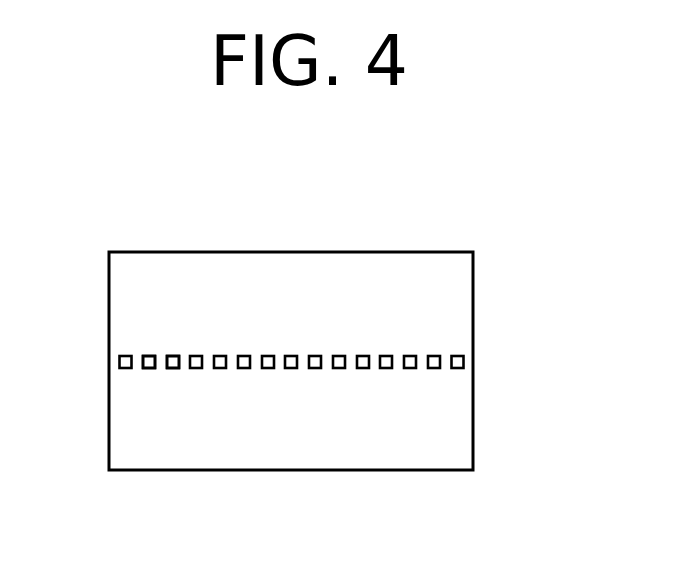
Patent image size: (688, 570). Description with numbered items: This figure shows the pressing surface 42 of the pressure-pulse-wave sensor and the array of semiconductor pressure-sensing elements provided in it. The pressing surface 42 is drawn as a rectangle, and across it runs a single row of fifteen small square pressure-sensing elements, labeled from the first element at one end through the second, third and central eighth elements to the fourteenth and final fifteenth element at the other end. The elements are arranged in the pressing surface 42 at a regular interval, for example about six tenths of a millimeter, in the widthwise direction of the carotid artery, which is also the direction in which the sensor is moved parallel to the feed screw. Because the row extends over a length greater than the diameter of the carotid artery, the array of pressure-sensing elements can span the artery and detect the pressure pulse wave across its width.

The pressing surface 42 is at (347, 263).